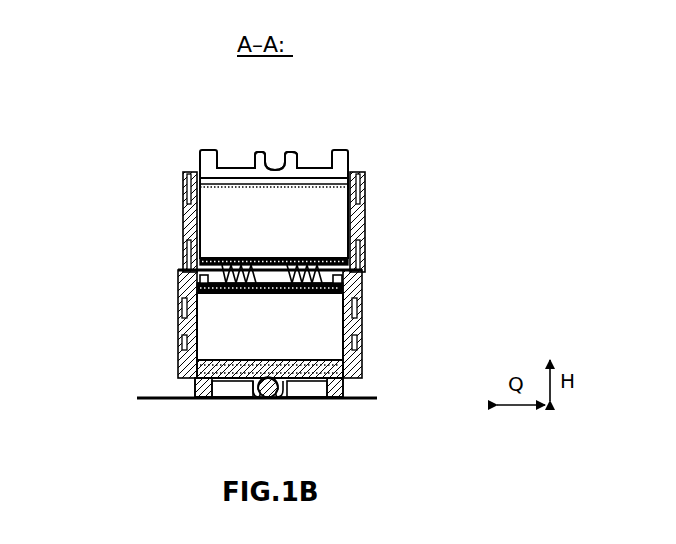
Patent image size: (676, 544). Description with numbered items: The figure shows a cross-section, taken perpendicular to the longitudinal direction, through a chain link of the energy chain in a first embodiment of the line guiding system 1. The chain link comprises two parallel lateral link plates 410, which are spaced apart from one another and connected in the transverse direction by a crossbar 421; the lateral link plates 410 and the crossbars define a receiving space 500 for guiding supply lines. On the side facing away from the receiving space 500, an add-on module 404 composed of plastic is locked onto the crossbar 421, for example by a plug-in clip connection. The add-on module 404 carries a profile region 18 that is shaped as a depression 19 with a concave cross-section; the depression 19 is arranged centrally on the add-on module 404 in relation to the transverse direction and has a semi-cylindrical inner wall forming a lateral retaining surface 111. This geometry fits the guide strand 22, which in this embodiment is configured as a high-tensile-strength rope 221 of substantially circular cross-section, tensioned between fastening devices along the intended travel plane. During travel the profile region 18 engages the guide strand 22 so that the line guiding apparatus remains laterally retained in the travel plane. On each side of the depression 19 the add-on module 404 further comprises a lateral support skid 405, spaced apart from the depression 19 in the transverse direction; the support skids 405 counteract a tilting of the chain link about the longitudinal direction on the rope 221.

The line guiding system 1 is at (74, 122).
The add-on module 404 is at (201, 141).
The depression 19 is at (264, 158).
The lateral retaining surface 111 is at (276, 161).
The profile region 18 is at (301, 154).
The receiving space 500 is at (300, 233).
The lateral link plate 410 is at (186, 195).
The crossbar 421 is at (250, 294).
The support skid 405 is at (340, 391).
The guide strand 22 is at (278, 400).
The rope 221 is at (264, 400).